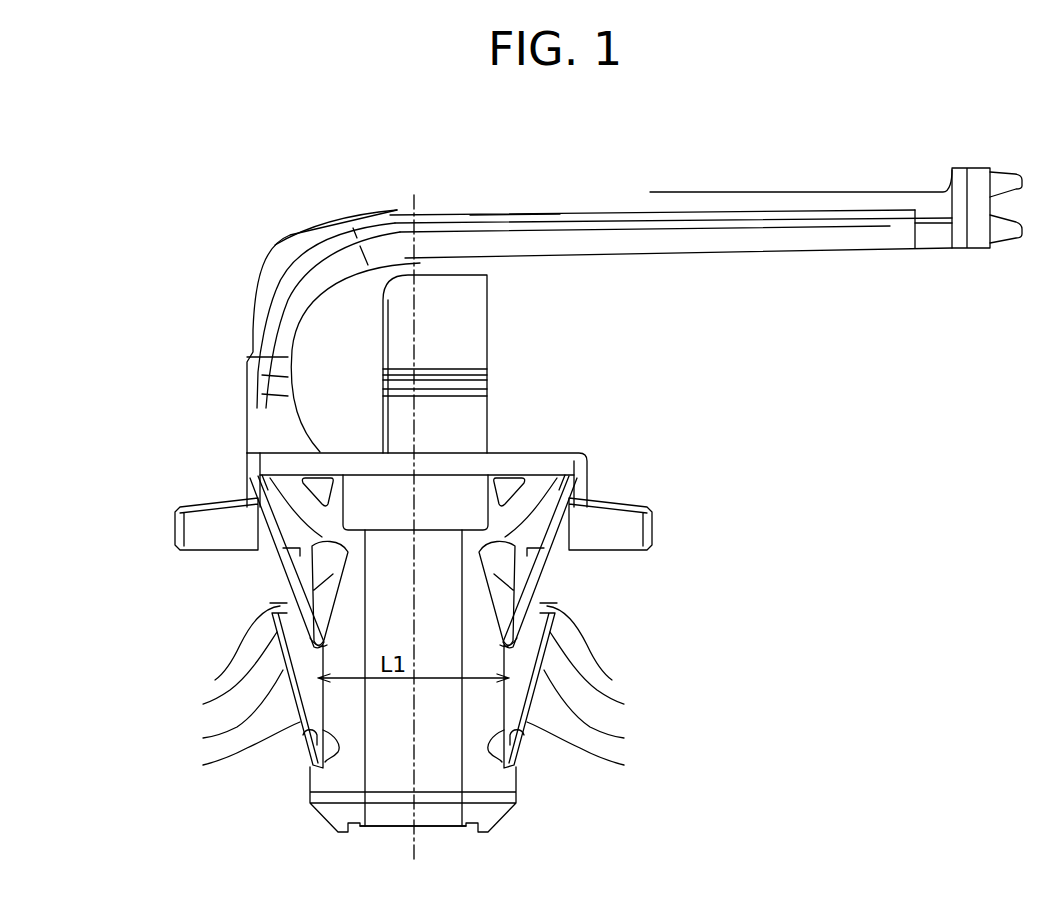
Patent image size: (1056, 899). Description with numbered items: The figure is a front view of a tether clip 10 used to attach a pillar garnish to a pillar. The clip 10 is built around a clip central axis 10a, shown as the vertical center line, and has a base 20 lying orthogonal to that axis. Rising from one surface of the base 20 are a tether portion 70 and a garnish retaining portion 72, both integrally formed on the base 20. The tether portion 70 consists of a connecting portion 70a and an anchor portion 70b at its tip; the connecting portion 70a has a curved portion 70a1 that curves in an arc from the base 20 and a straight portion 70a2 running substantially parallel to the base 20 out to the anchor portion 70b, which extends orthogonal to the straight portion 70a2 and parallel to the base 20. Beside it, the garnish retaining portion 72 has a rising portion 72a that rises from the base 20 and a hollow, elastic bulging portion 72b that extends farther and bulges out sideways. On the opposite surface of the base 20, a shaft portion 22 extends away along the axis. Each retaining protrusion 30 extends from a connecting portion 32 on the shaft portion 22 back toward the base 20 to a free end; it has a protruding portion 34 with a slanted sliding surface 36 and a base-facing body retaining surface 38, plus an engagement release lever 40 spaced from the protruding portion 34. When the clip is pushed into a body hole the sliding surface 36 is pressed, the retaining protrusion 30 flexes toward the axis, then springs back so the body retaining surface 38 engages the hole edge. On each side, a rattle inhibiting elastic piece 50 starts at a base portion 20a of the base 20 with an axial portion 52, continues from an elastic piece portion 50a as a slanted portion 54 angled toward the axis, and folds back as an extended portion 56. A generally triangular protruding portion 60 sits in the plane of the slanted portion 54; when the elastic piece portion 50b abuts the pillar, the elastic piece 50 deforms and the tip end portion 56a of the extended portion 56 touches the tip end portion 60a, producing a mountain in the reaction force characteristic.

The clip 10 is at (553, 440).
The clip central axis 10a is at (440, 826).
The base 20 is at (560, 452).
The base portion 20a is at (580, 470).
The shaft portion 22 is at (510, 797).
The retaining protrusion 30 is at (415, 695).
The connecting portion 32 is at (415, 751).
The protruding portion 34 is at (203, 704).
The sliding surface 36 is at (203, 738).
The body retaining surface 38 is at (215, 680).
The engagement release lever 40 is at (207, 522).
The rattle inhibiting elastic piece 50 is at (415, 645).
The elastic piece portion 50a is at (268, 490).
The elastic piece portion 50b is at (312, 768).
The axial portion 52 is at (268, 548).
The slanted portion 54 is at (345, 535).
The extended portion 56 is at (287, 603).
The tip end portion 56a is at (300, 575).
The protruding portion 60 is at (487, 493).
The tip end portion 60a is at (316, 478).
The tether portion 70 is at (635, 135).
The connecting portion 70a is at (510, 165).
The curved portion 70a1 is at (402, 196).
The straight portion 70a2 is at (530, 214).
The anchor portion 70b is at (650, 192).
The garnish retaining portion 72 is at (605, 296).
The rising portion 72a is at (463, 404).
The bulging portion 72b is at (437, 372).